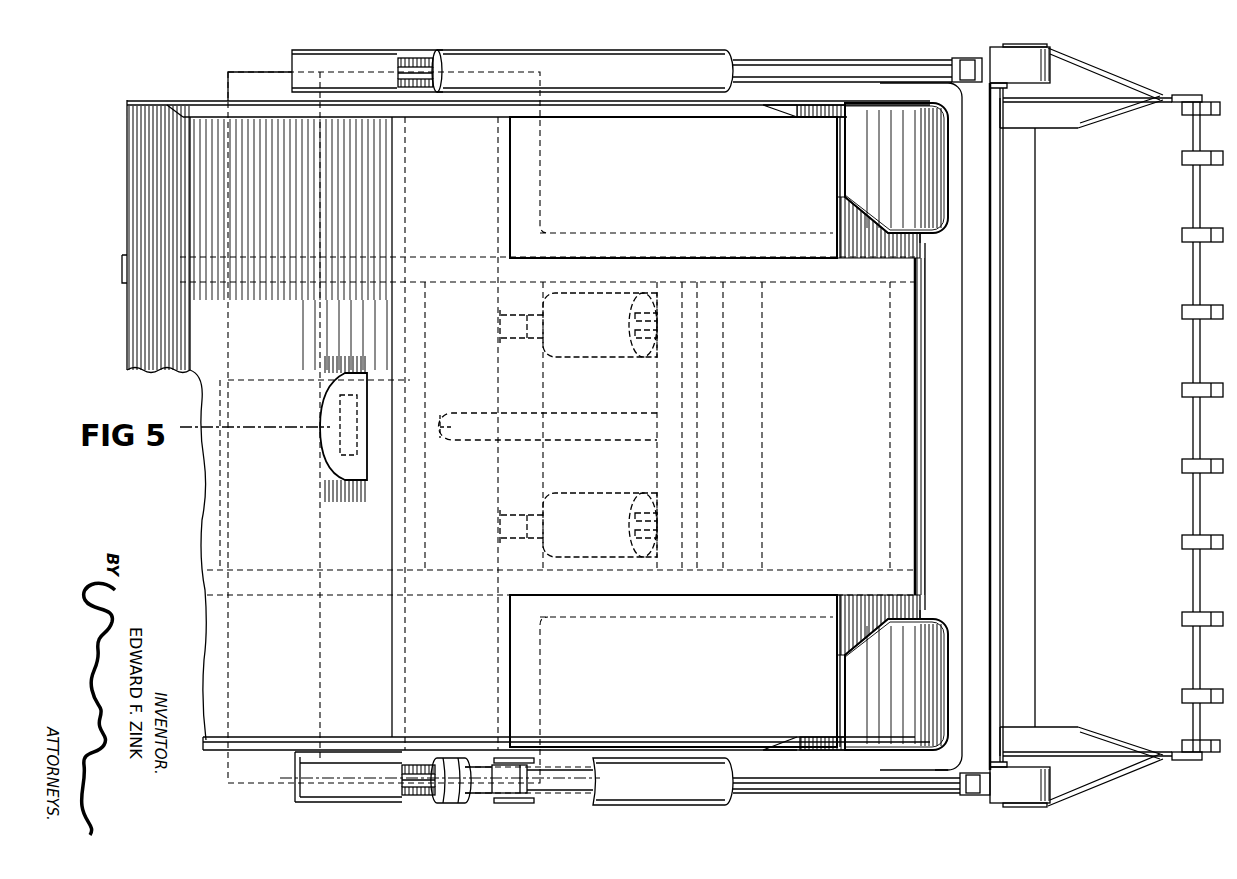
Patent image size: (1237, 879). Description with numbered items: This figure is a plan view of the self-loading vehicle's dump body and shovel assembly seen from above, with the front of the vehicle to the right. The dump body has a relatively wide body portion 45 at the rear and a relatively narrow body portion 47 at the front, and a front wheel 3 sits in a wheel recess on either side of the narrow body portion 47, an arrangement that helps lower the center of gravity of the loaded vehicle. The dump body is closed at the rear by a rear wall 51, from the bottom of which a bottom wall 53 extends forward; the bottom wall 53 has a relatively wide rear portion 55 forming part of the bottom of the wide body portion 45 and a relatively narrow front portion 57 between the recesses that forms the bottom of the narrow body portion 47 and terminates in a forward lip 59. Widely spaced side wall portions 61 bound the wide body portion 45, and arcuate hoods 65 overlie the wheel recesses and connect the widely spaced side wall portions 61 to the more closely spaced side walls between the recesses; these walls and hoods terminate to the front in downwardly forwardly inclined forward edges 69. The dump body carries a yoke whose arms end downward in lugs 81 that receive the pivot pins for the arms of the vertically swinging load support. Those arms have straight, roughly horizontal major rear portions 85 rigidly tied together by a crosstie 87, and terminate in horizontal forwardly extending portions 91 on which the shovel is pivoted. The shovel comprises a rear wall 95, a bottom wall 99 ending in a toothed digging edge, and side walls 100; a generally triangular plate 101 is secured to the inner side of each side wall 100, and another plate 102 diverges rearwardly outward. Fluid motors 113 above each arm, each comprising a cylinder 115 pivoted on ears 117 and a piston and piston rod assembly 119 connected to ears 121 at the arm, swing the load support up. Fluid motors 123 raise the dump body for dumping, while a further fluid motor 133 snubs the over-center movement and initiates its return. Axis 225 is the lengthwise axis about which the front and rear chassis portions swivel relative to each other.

The wheels 3 is at (920, 214).
The relatively wide body portion 45 is at (447, 670).
The relatively narrow body portion 47 is at (818, 426).
The rear wall 51 is at (150, 213).
The bottom wall 53 is at (484, 426).
The relatively wide rear portion 55 is at (452, 670).
The relatively narrow front portion 57 is at (826, 426).
The forward lip 59 is at (914, 364).
The widely spaced side wall portions 61 is at (417, 106).
The arcuate hoods 65 is at (675, 432).
The forward edges 69 is at (834, 122).
The lugs 81 is at (530, 793).
The major rear portions 85 is at (750, 58).
The crosstie 87 is at (972, 405).
The horizontal forwardly extending portions 91 is at (1016, 64).
The rear wall 95 is at (1003, 525).
The bottom wall 99 is at (1113, 427).
The side walls 100 is at (1118, 100).
The generally triangular plate 101 is at (1119, 109).
The plate 102 is at (1088, 91).
The fluid motors 113 is at (654, 40).
The cylinder 115 is at (580, 40).
The ears 117 is at (406, 54).
The piston and piston rod assembly 119 is at (828, 64).
The ears 121 is at (960, 58).
The fluid motors 123 is at (574, 354).
The further fluid motor 133 is at (602, 440).
The axis 225 is at (208, 455).